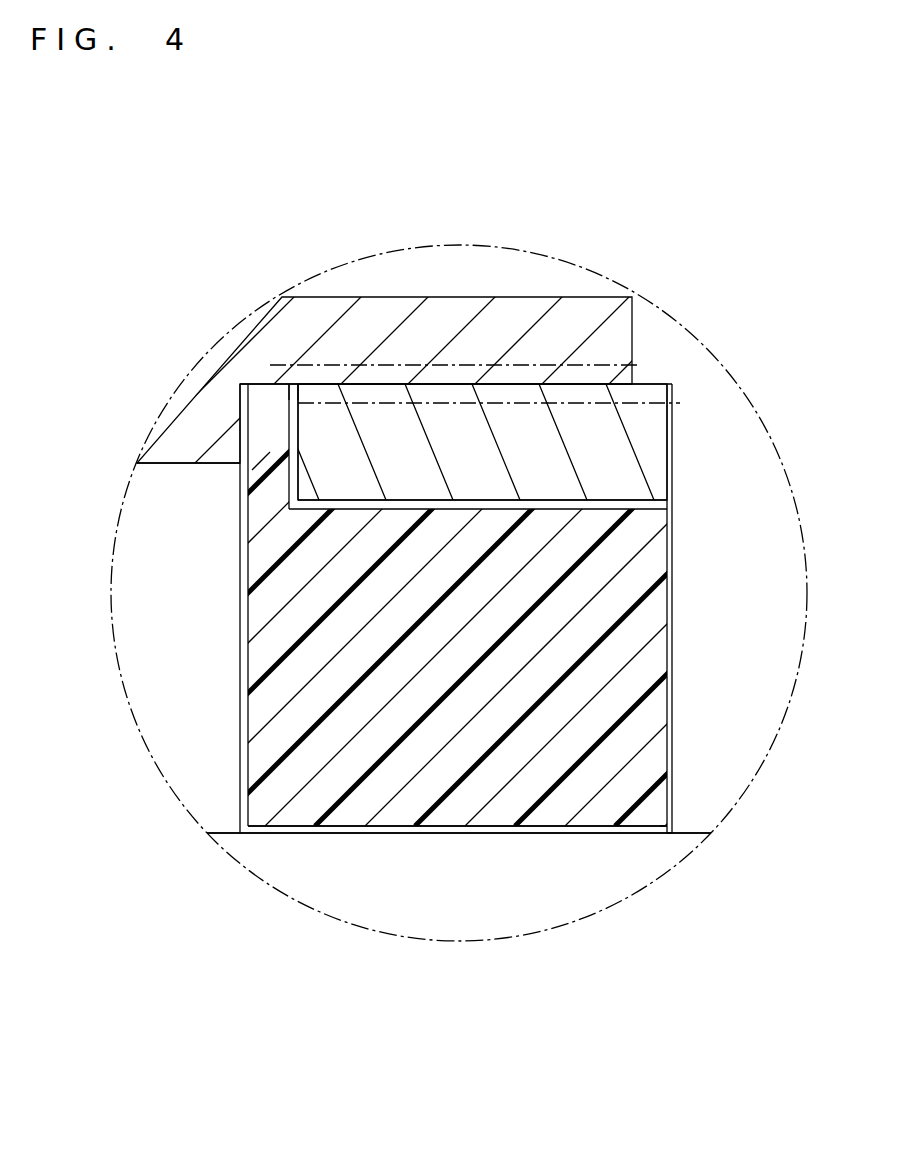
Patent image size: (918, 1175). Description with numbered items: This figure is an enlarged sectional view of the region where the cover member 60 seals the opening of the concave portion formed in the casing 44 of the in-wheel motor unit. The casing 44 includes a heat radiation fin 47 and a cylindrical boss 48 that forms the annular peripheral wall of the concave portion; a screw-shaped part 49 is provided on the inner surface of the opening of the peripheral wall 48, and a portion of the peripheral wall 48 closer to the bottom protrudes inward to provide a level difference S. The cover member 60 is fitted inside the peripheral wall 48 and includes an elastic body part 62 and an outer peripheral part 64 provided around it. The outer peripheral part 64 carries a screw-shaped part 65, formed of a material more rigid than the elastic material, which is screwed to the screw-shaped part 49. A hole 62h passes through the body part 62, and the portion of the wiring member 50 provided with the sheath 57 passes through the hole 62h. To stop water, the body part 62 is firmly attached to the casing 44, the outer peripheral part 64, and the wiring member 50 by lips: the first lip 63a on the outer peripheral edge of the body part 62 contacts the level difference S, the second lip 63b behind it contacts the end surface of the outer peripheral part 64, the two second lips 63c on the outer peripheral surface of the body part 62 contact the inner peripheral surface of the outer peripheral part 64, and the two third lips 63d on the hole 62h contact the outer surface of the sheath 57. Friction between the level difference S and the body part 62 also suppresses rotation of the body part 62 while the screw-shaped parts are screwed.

The casing 44 is at (552, 310).
The heat radiation fin 47 is at (165, 463).
The boss 48 is at (458, 334).
The screw-shaped part 49 is at (473, 365).
The wiring member 50 is at (443, 920).
The sheath 57 is at (459, 628).
The cover member 60 is at (686, 702).
The body part 62 is at (648, 728).
The hole 62h is at (655, 838).
The first lip 63a is at (254, 408).
The second lip 63b is at (305, 408).
The second lip 63c is at (625, 503).
The third lip 63d is at (566, 836).
The outer peripheral part 64 is at (650, 440).
The screw-shaped part 65 is at (645, 415).
The level difference S is at (262, 468).